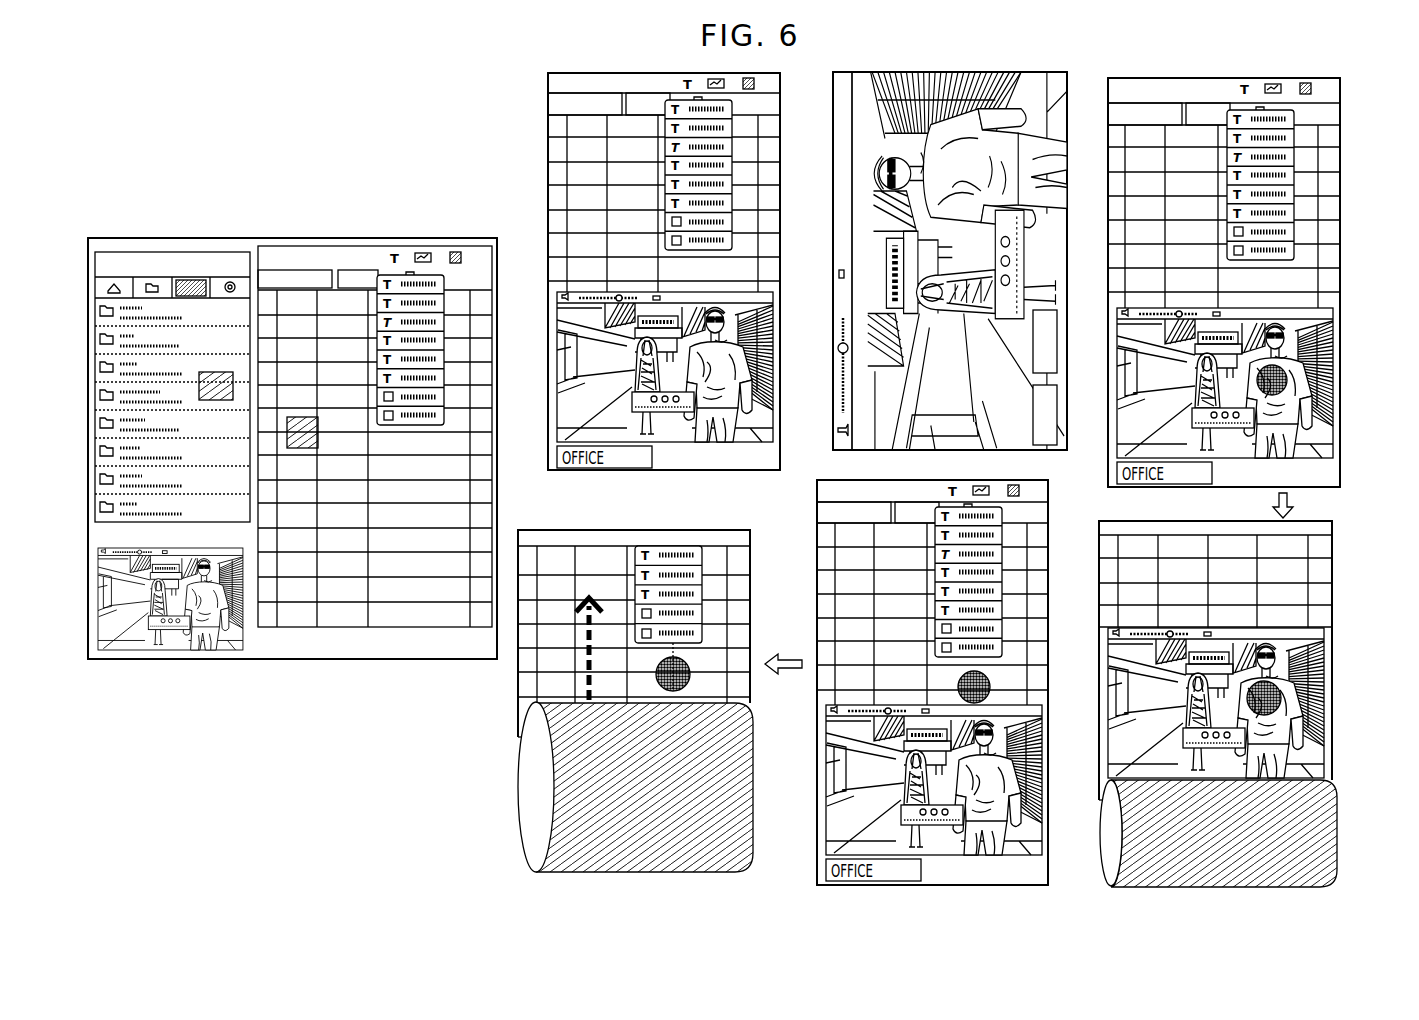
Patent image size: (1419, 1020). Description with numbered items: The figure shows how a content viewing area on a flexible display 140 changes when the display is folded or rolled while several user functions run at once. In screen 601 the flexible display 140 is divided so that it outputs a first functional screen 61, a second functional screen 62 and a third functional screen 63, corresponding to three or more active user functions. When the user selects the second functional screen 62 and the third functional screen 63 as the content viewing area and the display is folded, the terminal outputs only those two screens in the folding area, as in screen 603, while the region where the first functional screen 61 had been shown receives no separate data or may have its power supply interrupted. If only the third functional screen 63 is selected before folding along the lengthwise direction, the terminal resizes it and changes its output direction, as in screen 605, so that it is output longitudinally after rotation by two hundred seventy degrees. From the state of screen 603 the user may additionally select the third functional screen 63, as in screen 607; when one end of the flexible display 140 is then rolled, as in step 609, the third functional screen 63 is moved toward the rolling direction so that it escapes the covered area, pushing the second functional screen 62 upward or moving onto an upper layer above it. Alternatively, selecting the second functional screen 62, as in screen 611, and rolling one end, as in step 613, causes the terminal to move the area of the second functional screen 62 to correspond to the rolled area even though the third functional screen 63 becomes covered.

The first functional screen 61 is at (187, 267).
The second functional screen 62 is at (484, 300).
The third functional screen 63 is at (108, 650).
The flexible display 140 is at (400, 227).
The screen 601 is at (293, 239).
The screen 603 is at (588, 73).
The screen 605 is at (950, 72).
The screen 607 is at (1230, 78).
The step 609 is at (1338, 657).
The screen 611 is at (1050, 556).
The step 613 is at (570, 530).